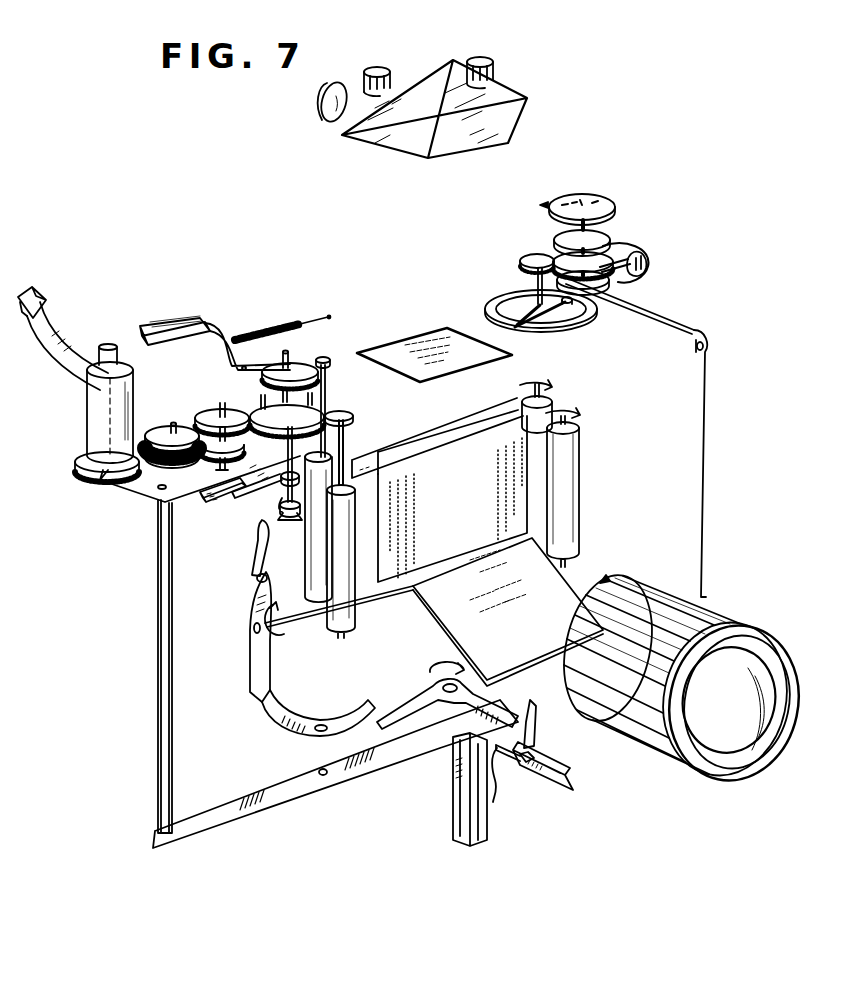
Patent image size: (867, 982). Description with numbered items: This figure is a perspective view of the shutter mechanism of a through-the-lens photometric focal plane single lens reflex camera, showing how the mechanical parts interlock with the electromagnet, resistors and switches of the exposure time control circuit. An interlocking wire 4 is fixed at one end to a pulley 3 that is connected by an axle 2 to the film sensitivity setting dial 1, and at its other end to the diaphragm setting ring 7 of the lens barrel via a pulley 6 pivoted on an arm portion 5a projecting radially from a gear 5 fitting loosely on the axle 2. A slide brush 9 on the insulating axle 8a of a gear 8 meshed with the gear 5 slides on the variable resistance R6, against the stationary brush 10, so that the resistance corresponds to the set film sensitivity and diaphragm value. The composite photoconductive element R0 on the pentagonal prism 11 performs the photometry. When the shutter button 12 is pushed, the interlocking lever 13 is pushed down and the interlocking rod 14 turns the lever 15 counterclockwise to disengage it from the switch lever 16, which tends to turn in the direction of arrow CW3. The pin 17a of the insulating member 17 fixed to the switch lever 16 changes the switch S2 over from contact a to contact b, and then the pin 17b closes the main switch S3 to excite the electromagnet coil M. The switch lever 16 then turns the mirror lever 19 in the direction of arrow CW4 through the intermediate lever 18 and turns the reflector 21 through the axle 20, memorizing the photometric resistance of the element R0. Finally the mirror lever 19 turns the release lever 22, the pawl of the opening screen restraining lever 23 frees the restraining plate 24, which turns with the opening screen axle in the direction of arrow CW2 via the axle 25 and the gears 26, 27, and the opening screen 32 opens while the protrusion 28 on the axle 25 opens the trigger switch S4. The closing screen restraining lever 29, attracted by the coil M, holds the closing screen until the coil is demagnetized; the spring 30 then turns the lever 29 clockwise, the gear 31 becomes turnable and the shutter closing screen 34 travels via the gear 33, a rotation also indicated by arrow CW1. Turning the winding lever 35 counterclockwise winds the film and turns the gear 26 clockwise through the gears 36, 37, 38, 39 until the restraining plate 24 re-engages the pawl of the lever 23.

The photoconductive element R0 is at (377, 70).
The pentagonal prism 11 is at (507, 88).
The film sensitivity setting dial 1 is at (603, 200).
The axle 2 is at (603, 232).
The pulley 3 is at (612, 252).
The gear 5 is at (632, 246).
The arm portion 5a is at (610, 284).
The pulley 6 is at (646, 265).
The gear 8 is at (530, 259).
The insulating axle 8a is at (535, 282).
The slide brush 9 is at (496, 306).
The stationary brush 10 is at (574, 305).
The variable resistance R6 is at (550, 328).
The interlocking wire 4 is at (680, 326).
The winding lever 35 is at (36, 292).
The shutter button 12 is at (108, 346).
The gear 36 is at (90, 468).
The gear 37 is at (166, 430).
The gear 38 is at (208, 440).
The gear 39 is at (217, 410).
The interlocking lever 13 is at (135, 492).
The electromagnet coil M is at (165, 318).
The closing screen restraining lever 29 is at (222, 348).
The spring 30 is at (240, 336).
The gear 31 is at (300, 365).
The gear 33 is at (330, 357).
The gear 26 is at (318, 407).
The gear 27 is at (350, 414).
The axle 25 is at (288, 444).
The restraining plate 24 is at (292, 522).
The protrusion 28 is at (268, 495).
The trigger switch S4 is at (218, 508).
The opening screen restraining lever 23 is at (256, 550).
The release lever 22 is at (257, 580).
The axle 20 is at (366, 612).
The arrow CW4 is at (299, 632).
The shutter closing screen 34 is at (386, 438).
The opening screen 32 is at (446, 470).
The arrow CW1 is at (561, 399).
The arrow CW2 is at (589, 486).
The reflector 21 is at (522, 652).
The interlocking rod 14 is at (157, 598).
The lever 15 is at (240, 812).
The mirror lever 19 is at (252, 648).
The intermediate lever 18 is at (286, 716).
The switch lever 16 is at (422, 698).
The arrow CW3 is at (442, 654).
The insulating member 17 is at (538, 734).
The contact a is at (538, 758).
The pin 17a is at (508, 764).
The pin 17b is at (513, 788).
The contact b is at (545, 792).
The switch S2 is at (565, 782).
The main switch S3 is at (478, 836).
The diaphragm setting ring 7 is at (660, 578).